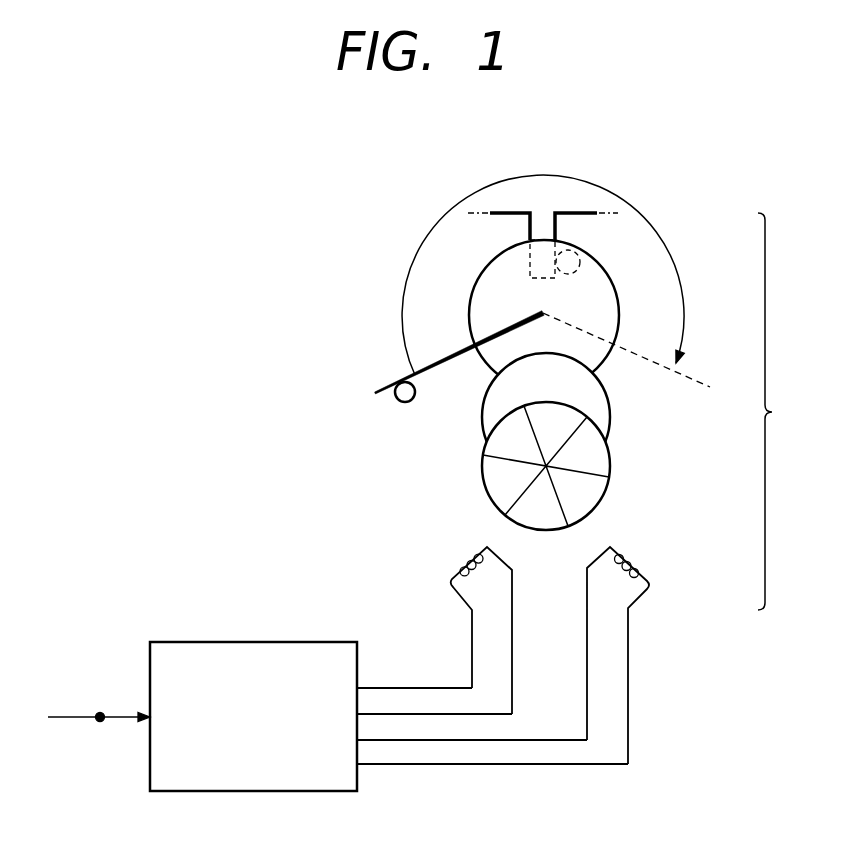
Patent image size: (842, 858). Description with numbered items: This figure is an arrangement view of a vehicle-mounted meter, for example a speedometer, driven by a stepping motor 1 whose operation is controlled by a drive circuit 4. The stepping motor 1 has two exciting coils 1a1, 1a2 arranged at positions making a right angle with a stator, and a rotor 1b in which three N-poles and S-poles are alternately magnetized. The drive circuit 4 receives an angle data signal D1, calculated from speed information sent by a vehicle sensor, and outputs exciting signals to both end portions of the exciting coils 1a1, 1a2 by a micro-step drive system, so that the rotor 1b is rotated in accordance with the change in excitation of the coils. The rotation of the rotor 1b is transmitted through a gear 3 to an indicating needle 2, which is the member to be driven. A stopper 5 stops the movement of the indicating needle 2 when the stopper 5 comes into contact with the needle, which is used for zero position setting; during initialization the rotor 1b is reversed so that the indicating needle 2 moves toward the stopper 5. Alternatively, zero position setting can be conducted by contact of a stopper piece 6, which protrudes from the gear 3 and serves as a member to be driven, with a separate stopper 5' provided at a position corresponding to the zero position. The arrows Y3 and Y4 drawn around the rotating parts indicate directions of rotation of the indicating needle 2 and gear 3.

The stepping motor 1 is at (778, 411).
The exciting coil 1a1 is at (645, 552).
The exciting coil 1a2 is at (482, 579).
The rotor 1b is at (610, 453).
The indicating needle 2 is at (432, 362).
The gear 3 is at (597, 352).
The drive circuit 4 is at (285, 642).
The stopper 5 is at (399, 422).
The stopper 5' is at (504, 259).
The stopper piece 6 is at (582, 270).
The angle data signal D1 is at (100, 715).
The rotation direction Y3 is at (682, 200).
The rotation direction Y4 is at (455, 163).